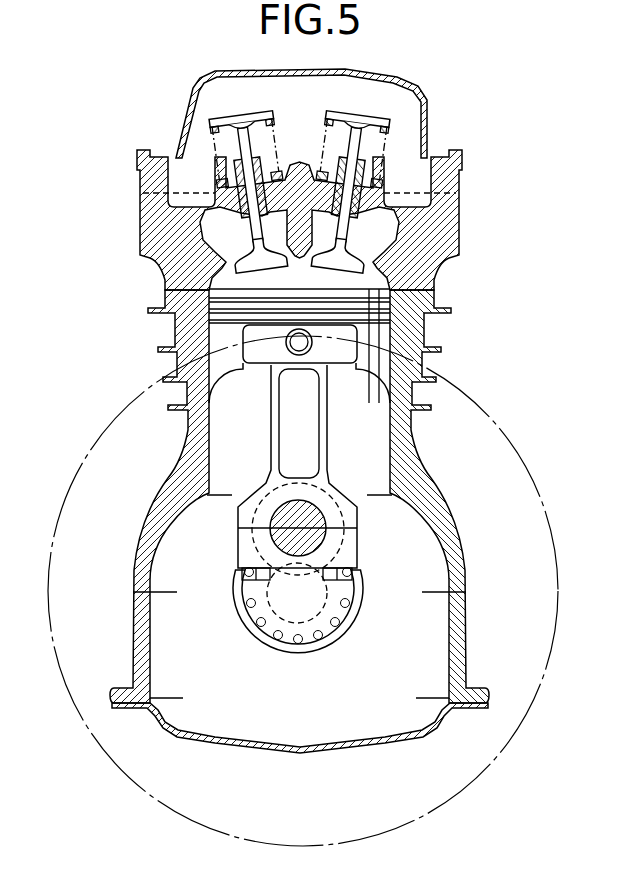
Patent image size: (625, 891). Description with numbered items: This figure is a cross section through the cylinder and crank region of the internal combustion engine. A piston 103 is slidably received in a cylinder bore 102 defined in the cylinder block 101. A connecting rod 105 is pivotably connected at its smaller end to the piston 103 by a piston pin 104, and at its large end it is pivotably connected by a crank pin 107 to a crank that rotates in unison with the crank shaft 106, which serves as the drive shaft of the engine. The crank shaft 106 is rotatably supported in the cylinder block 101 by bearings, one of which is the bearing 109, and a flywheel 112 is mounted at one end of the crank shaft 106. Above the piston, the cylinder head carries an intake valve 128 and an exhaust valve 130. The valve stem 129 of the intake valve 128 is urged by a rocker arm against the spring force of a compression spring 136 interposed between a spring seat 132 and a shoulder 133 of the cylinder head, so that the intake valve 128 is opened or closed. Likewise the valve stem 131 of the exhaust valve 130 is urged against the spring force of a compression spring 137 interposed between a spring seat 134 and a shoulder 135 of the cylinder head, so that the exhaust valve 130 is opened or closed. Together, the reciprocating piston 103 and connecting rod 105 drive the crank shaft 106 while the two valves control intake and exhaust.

The cylinder block 101 is at (414, 440).
The cylinder bore 102 is at (208, 443).
The piston 103 is at (363, 373).
The piston pin 104 is at (286, 345).
The connecting rod 105 is at (275, 421).
The crank shaft 106 is at (265, 628).
The crank pin 107 is at (312, 502).
The bearing 109 is at (323, 643).
The flywheel 112 is at (532, 476).
The intake valve 128 is at (238, 268).
The valve stem 129 is at (262, 222).
The exhaust valve 130 is at (368, 270).
The valve stem 131 is at (352, 228).
The spring seat 132 is at (216, 122).
The shoulder of the cylinder head 133 is at (222, 183).
The spring seat 134 is at (334, 121).
The shoulder of the cylinder head 135 is at (383, 185).
The compression spring 136 is at (273, 150).
The compression spring 137 is at (393, 143).